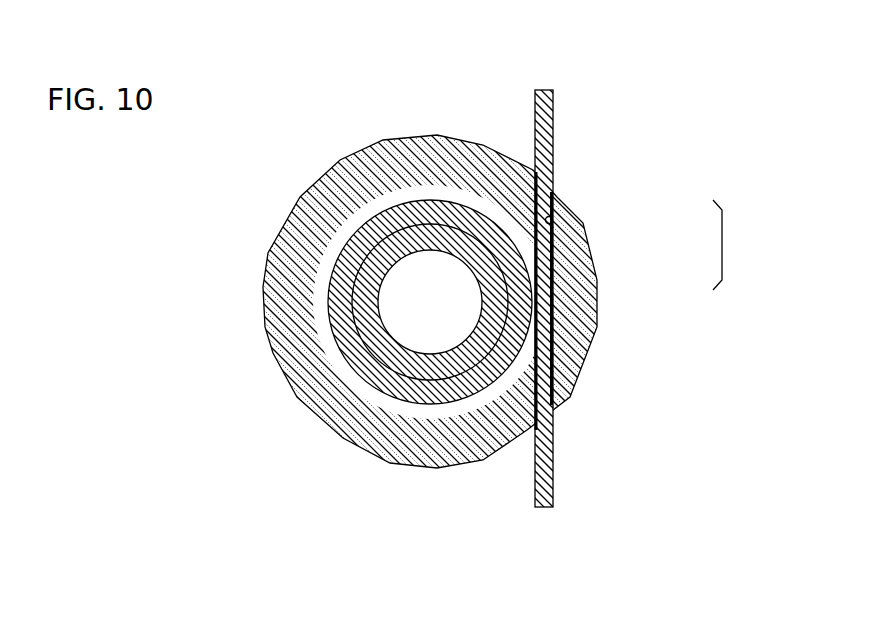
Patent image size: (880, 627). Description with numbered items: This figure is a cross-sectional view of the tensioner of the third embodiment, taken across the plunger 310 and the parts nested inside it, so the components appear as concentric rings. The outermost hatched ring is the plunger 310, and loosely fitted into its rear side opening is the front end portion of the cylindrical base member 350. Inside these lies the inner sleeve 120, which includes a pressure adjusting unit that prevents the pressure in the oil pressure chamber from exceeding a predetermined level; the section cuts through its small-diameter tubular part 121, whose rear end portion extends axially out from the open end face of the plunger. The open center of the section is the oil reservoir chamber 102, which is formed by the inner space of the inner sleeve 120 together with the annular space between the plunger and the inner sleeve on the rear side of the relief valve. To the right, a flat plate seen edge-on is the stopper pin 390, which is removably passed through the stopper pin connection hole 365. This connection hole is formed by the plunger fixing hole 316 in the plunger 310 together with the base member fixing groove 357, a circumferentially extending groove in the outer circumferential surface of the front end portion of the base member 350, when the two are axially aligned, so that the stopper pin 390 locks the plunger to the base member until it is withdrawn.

The oil reservoir chamber 102 is at (403, 282).
The inner sleeve 120 is at (421, 378).
The small-diameter tubular part 121 is at (407, 230).
The plunger 310 is at (304, 413).
The base member 350 is at (327, 322).
The plunger fixing hole 316 is at (553, 213).
The base member fixing groove 357 is at (527, 252).
The stopper pin connection hole 365 is at (735, 245).
The stopper pin 390 is at (547, 430).